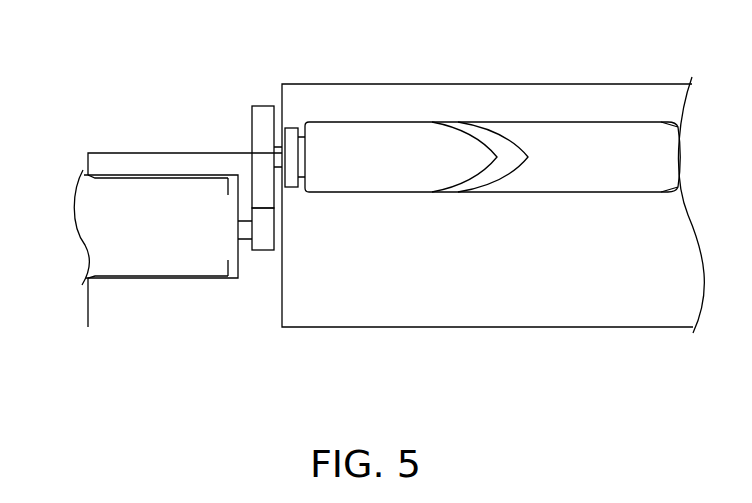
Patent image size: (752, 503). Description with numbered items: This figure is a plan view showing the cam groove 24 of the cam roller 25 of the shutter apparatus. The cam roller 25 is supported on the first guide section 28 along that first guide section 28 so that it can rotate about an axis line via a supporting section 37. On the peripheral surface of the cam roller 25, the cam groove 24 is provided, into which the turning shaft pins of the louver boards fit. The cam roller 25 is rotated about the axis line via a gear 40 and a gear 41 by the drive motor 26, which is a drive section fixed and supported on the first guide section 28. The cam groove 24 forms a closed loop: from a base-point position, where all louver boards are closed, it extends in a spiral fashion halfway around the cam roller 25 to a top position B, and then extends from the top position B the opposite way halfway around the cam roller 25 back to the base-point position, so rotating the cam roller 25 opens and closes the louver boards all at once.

The cam groove 24 is at (453, 122).
The cam roller 25 is at (630, 135).
The top position B is at (509, 157).
The drive motor 26 is at (93, 229).
The first guide section 28 is at (662, 315).
The supporting section 37 is at (291, 128).
The gear 40 is at (263, 243).
The gear 41 is at (261, 106).